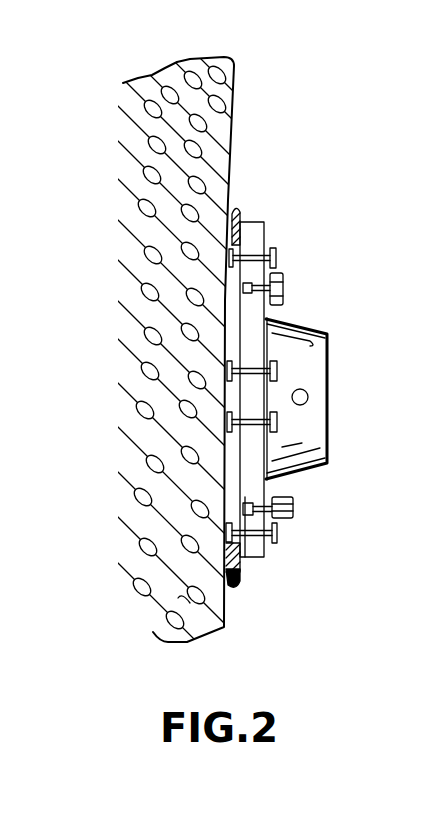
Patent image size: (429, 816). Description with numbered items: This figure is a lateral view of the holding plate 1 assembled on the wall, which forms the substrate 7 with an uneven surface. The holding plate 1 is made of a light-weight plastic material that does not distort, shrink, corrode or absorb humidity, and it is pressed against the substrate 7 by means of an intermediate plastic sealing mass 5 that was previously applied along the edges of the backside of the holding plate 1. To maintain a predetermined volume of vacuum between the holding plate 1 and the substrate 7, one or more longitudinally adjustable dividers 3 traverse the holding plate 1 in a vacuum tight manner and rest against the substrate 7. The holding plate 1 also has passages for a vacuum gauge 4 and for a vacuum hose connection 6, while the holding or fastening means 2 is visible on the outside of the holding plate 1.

The holding plate 1 is at (263, 224).
The holding or fastening means 2 is at (325, 351).
The longitudinally adjustable divider 3 is at (277, 260).
The vacuum gauge 4 is at (284, 291).
The plastic sealing mass 5 is at (239, 214).
The vacuum hose connection 6 is at (294, 512).
The substrate 7 is at (226, 612).